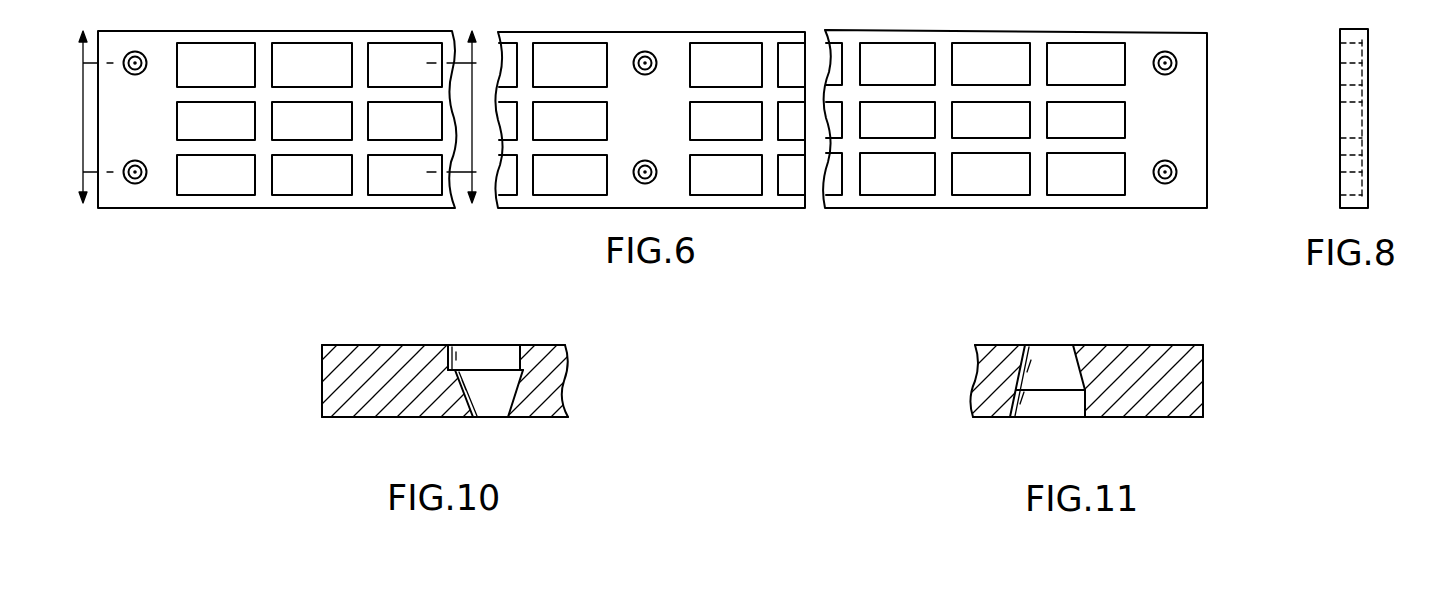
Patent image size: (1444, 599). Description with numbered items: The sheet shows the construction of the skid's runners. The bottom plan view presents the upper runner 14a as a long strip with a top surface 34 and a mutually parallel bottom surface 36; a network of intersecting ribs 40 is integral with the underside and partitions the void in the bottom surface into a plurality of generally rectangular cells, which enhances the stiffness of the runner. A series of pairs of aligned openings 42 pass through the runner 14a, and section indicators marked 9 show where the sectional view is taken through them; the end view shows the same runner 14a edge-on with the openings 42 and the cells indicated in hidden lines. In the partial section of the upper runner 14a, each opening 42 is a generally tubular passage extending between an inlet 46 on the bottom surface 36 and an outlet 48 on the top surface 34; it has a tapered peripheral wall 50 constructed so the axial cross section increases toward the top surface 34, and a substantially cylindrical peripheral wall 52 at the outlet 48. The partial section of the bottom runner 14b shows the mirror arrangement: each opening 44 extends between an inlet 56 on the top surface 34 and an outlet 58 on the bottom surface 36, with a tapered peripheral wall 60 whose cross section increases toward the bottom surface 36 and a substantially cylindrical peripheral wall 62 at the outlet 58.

In FIG. 6, the section line 9- 9 is at (275, 117).
In FIG. 6, the upper runner 14a is at (160, 190).
In FIG. 8, the upper runner 14a is at (1361, 90).
In FIG. 10, the upper runner 14a is at (340, 407).
In FIG. 11, the bottom runner 14b is at (1190, 407).
In FIG. 10, the top surface 34 is at (557, 348).
In FIG. 11, the top surface 34 is at (1147, 345).
In FIG. 10, the bottom surface 36 is at (553, 417).
In FIG. 11, the bottom surface 36 is at (1123, 417).
In FIG. 6, the ribs 40 is at (950, 0).
In FIG. 6, the openings 42 is at (136, 78).
In FIG. 8, the openings 42 is at (1358, 63).
In FIG. 10, the openings 42 is at (455, 350).
In FIG. 11, the openings 44 is at (1069, 356).
In FIG. 10, the inlet 46 is at (495, 417).
In FIG. 10, the outlet 48 is at (490, 345).
In FIG. 10, the tapered peripheral wall 50 is at (473, 406).
In FIG. 10, the cylindrical peripheral wall 52 is at (515, 345).
In FIG. 11, the inlet 56 is at (1045, 343).
In FIG. 11, the outlet 58 is at (1042, 417).
In FIG. 11, the tapered peripheral wall 60 is at (1030, 345).
In FIG. 11, the cylindrical peripheral wall 62 is at (1022, 405).